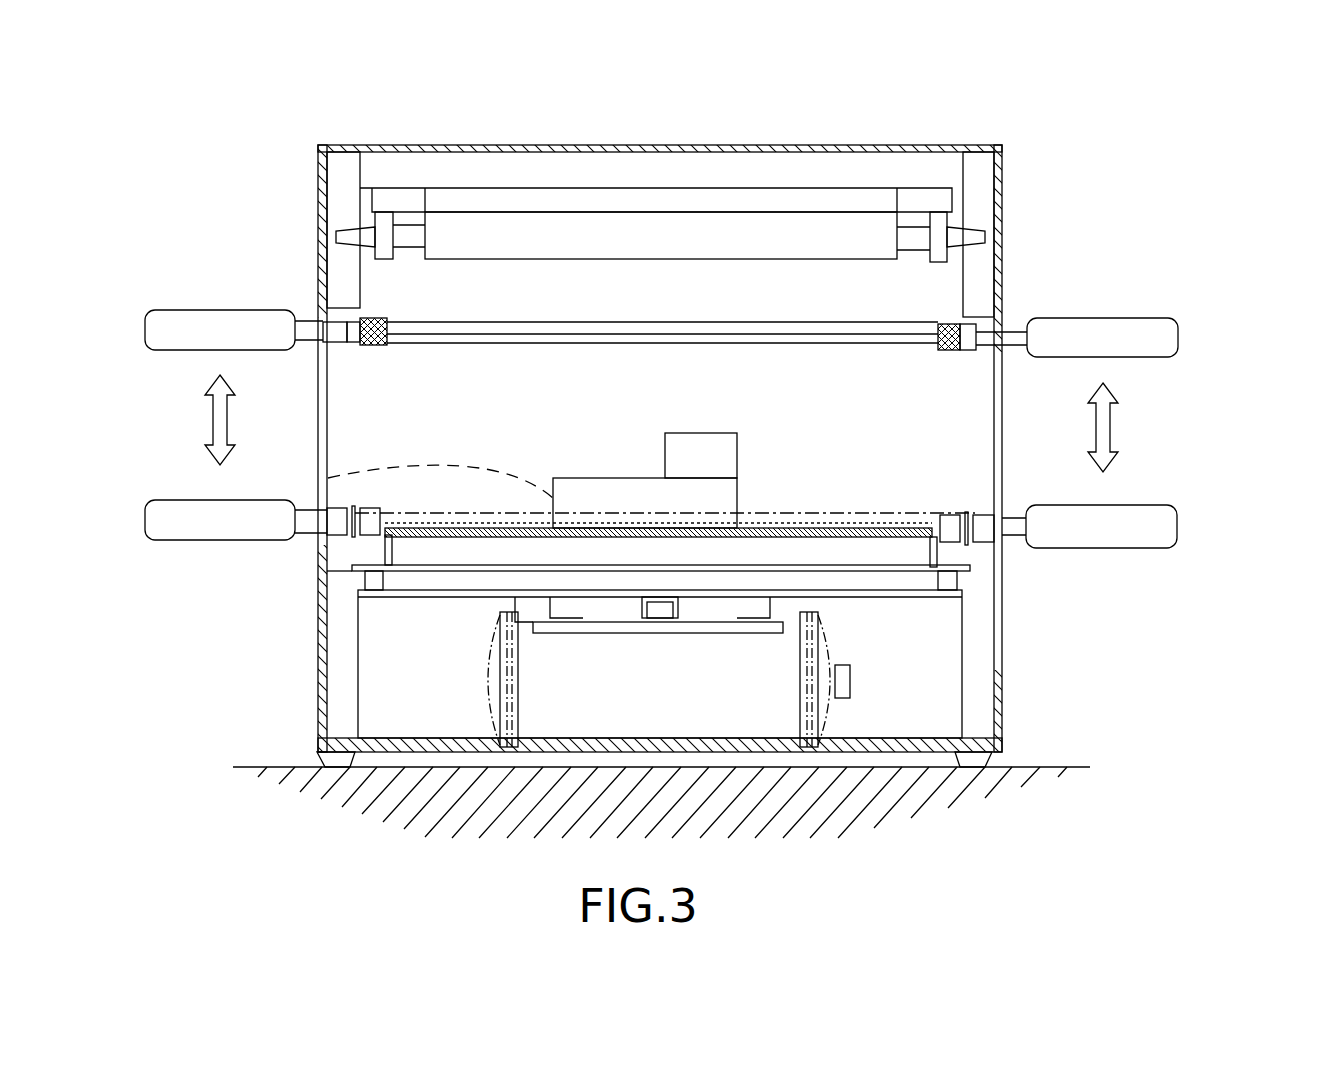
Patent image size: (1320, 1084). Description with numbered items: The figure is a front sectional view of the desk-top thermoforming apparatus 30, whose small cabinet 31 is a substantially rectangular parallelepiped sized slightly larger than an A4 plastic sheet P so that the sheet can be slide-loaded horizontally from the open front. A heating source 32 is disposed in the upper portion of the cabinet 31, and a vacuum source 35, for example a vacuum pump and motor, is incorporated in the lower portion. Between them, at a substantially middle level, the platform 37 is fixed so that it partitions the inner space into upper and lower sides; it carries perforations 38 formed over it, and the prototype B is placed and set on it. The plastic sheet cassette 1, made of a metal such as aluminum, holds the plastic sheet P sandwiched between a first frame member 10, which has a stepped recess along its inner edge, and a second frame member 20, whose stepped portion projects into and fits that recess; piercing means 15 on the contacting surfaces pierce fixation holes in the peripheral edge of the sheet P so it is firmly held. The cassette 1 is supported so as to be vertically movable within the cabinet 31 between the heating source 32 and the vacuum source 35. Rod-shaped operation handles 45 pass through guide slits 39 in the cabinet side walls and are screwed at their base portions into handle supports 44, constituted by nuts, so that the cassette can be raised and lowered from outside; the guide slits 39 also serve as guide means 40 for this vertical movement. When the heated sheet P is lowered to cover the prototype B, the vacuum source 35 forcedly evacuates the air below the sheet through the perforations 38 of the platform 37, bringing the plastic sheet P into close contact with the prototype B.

The thermoforming apparatus 30 is at (1147, 153).
The cabinet 31 is at (993, 150).
The heating source 32 is at (850, 227).
The handle supports 44 is at (990, 305).
The operation handles 45 is at (1143, 333).
The guide slits 39 is at (1000, 382).
The guide means 40 is at (323, 492).
The perforations 38 is at (897, 530).
The platform 37 is at (930, 558).
The vacuum source 35 is at (783, 658).
The plastic sheet cassette 1 is at (238, 210).
The second frame member 20 is at (363, 325).
The first frame member 10 is at (363, 347).
The piercing means 15 is at (367, 345).
The plastic sheet P is at (447, 332).
The prototype B is at (708, 460).